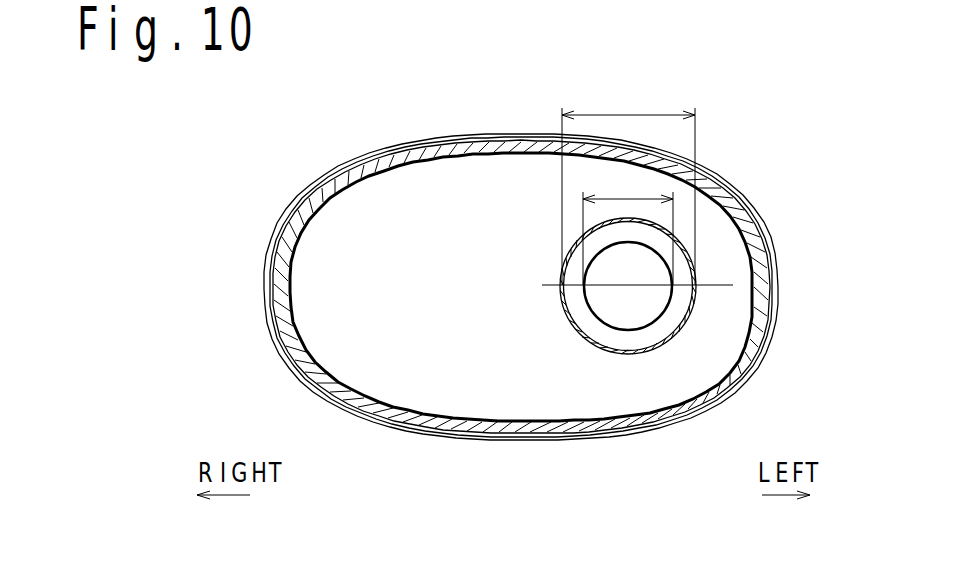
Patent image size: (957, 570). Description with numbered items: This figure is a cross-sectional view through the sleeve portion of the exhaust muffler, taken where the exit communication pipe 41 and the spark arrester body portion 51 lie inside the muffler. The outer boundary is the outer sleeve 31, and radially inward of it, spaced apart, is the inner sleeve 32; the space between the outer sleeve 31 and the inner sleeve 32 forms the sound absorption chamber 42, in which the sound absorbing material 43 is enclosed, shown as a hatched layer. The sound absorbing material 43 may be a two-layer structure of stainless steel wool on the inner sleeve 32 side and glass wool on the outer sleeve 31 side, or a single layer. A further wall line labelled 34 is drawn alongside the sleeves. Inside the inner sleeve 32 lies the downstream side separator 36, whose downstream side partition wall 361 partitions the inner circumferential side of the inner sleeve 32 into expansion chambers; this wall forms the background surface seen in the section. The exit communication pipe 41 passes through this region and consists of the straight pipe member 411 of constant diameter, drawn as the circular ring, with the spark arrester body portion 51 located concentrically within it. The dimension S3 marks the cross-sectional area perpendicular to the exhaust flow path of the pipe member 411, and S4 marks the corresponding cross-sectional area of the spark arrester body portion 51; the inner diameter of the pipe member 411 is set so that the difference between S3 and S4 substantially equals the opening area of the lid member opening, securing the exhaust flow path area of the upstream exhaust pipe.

The outer sleeve 31 is at (437, 435).
The inner sleeve 32 is at (392, 413).
The intermediate layer 34 is at (274, 340).
The downstream side separator 36 is at (373, 277).
The downstream side partition wall 361 is at (389, 209).
The exit communication pipe 41 is at (697, 310).
The pipe member 411 is at (563, 313).
The sound absorption chamber 42 is at (573, 422).
The sound absorbing material 43 is at (615, 424).
The spark arrester body portion 51 is at (603, 330).
The cross-sectional area of the pipe member S3 is at (628, 186).
The cross-sectional area of the spark arrester body portion S4 is at (628, 227).